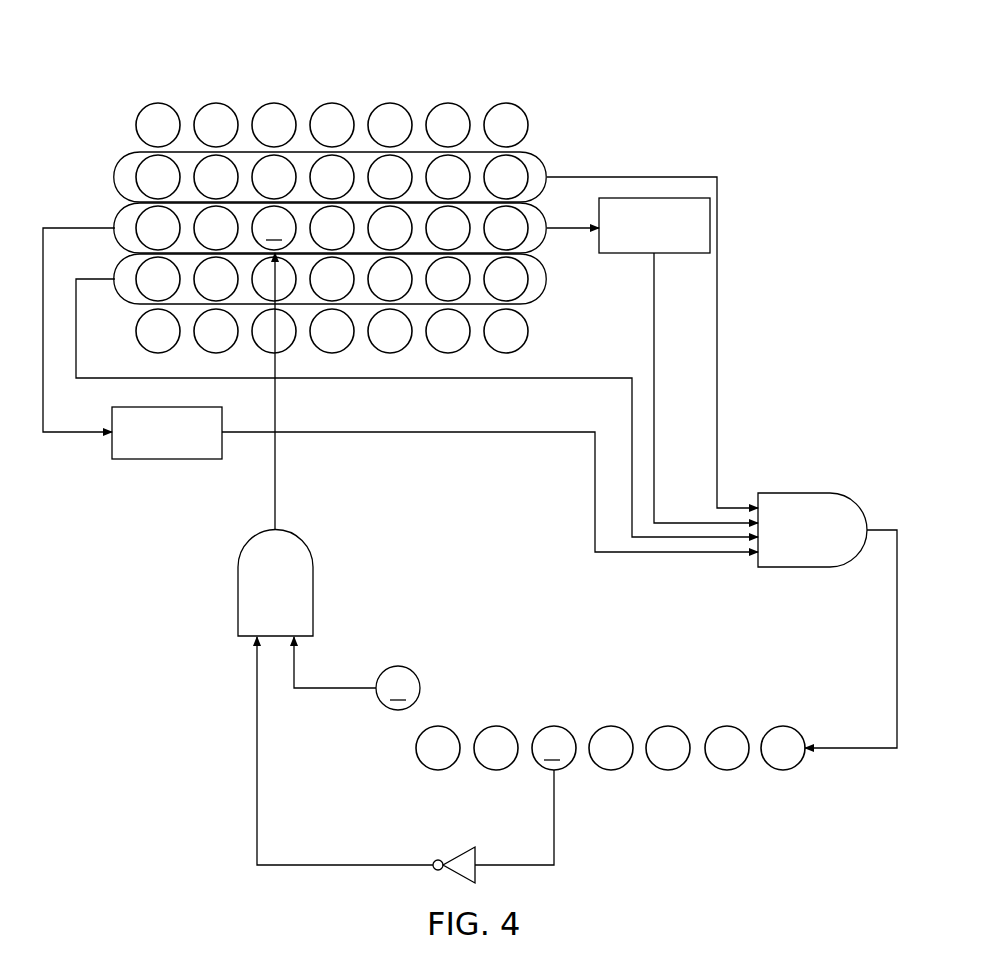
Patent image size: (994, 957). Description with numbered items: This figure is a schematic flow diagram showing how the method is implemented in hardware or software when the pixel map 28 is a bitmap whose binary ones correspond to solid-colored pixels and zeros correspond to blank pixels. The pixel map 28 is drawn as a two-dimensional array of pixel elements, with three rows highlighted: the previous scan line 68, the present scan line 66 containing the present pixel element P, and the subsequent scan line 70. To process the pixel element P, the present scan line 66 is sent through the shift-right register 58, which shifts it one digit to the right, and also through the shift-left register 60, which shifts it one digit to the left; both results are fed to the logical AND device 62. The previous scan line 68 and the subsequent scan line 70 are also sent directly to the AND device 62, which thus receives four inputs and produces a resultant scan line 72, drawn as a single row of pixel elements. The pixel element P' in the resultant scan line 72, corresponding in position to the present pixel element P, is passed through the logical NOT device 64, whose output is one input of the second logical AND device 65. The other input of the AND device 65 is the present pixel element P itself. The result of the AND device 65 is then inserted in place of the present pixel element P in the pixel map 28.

The pixel map 28 is at (424, 70).
The previous scan line 68 is at (546, 163).
The present scan line 66 is at (546, 214).
The subsequent scan line 70 is at (548, 280).
The shift-right register 58 is at (710, 226).
The shift-left register 60 is at (150, 459).
The logical AND device 62 is at (800, 493).
The logical AND device 65 is at (313, 556).
The resultant scan line 72 is at (662, 690).
The logical NOT device 64 is at (453, 850).